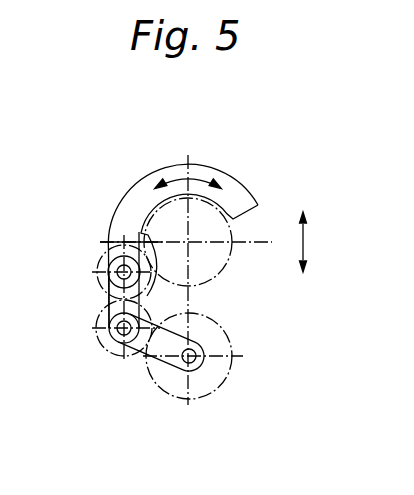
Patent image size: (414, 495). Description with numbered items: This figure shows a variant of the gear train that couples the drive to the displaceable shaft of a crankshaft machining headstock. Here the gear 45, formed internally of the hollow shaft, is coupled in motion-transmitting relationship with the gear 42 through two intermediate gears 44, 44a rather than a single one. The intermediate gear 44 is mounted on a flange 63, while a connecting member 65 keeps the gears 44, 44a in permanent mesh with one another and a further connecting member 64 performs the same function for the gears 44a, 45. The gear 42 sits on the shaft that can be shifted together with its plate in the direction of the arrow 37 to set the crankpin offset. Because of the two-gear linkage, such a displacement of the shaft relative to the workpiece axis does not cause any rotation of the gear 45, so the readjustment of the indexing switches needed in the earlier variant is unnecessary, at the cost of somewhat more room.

The arrow 37 is at (305, 243).
The gear 42 is at (227, 260).
The intermediate gear 44 is at (101, 344).
The intermediate gear 44a is at (98, 264).
The gear 45 is at (225, 333).
The flange 63 is at (133, 197).
The connecting member 64 is at (155, 368).
The connecting member 65 is at (108, 293).